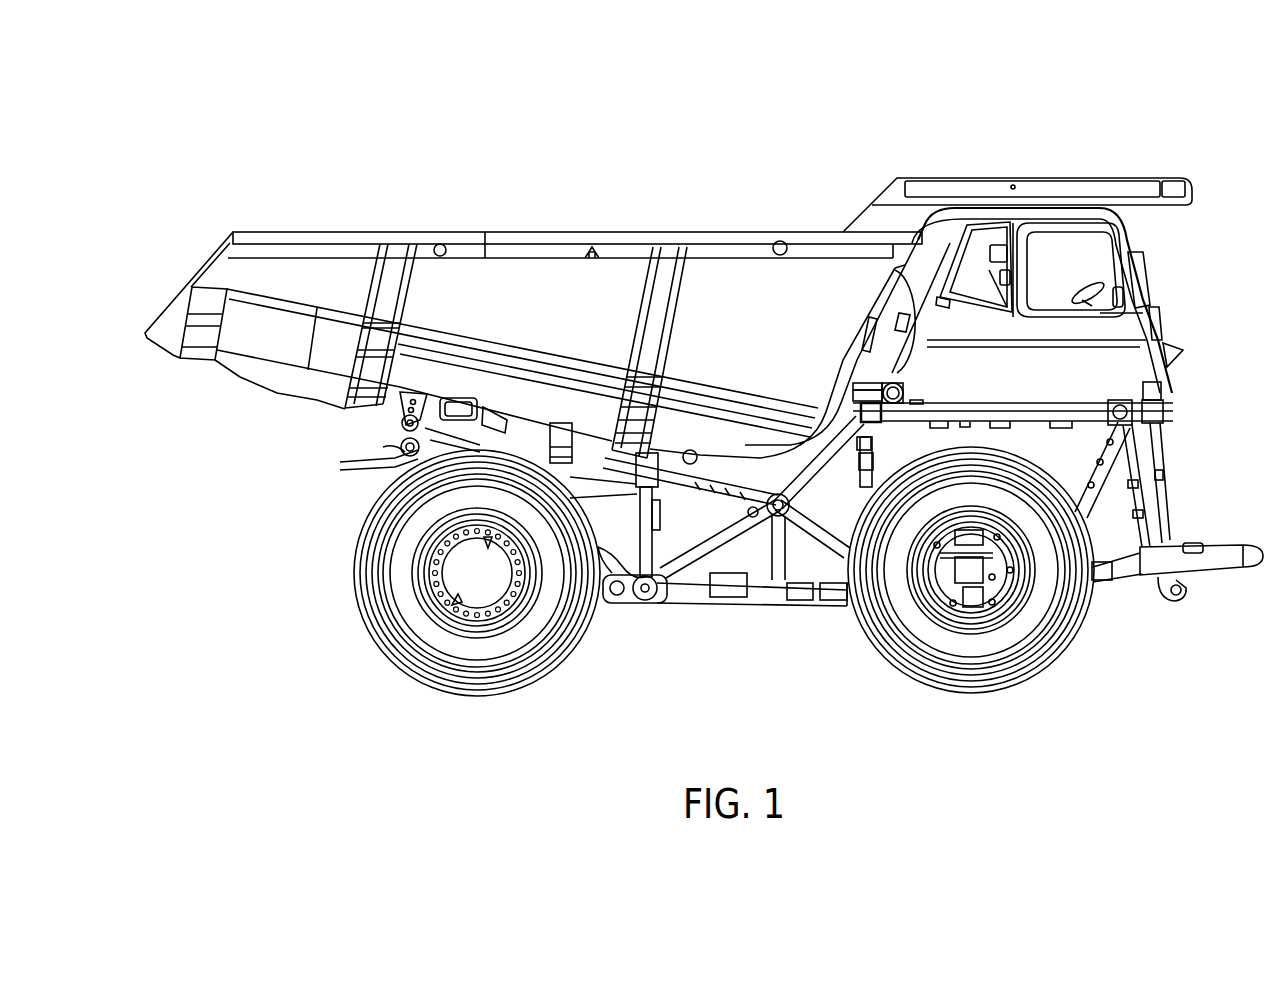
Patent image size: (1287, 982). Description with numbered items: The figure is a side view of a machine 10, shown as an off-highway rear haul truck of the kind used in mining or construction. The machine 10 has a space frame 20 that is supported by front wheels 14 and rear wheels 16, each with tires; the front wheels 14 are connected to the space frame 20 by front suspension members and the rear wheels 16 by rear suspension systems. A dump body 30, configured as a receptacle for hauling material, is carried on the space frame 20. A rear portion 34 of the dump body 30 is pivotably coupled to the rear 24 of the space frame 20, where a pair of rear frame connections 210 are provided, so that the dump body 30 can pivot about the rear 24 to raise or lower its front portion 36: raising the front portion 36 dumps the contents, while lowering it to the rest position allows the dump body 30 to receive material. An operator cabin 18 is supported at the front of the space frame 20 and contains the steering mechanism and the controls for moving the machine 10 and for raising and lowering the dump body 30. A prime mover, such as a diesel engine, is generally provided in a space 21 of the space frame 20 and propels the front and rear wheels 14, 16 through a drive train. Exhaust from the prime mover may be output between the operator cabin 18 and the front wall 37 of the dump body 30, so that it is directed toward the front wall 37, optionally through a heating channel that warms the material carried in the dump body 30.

The machine 10 is at (550, 190).
The front wheels 14 is at (973, 633).
The rear wheels 16 is at (470, 613).
The operator cabin 18 is at (1145, 253).
The space frame 20 is at (710, 622).
The space 21 is at (1060, 457).
The rear of the space frame 24 is at (300, 490).
The dump body 30 is at (398, 220).
The rear portion of the dump body 34 is at (193, 510).
The front portion of the dump body 36 is at (880, 160).
The front wall of the dump body 37 is at (892, 272).
The rear frame connections 210 is at (400, 447).